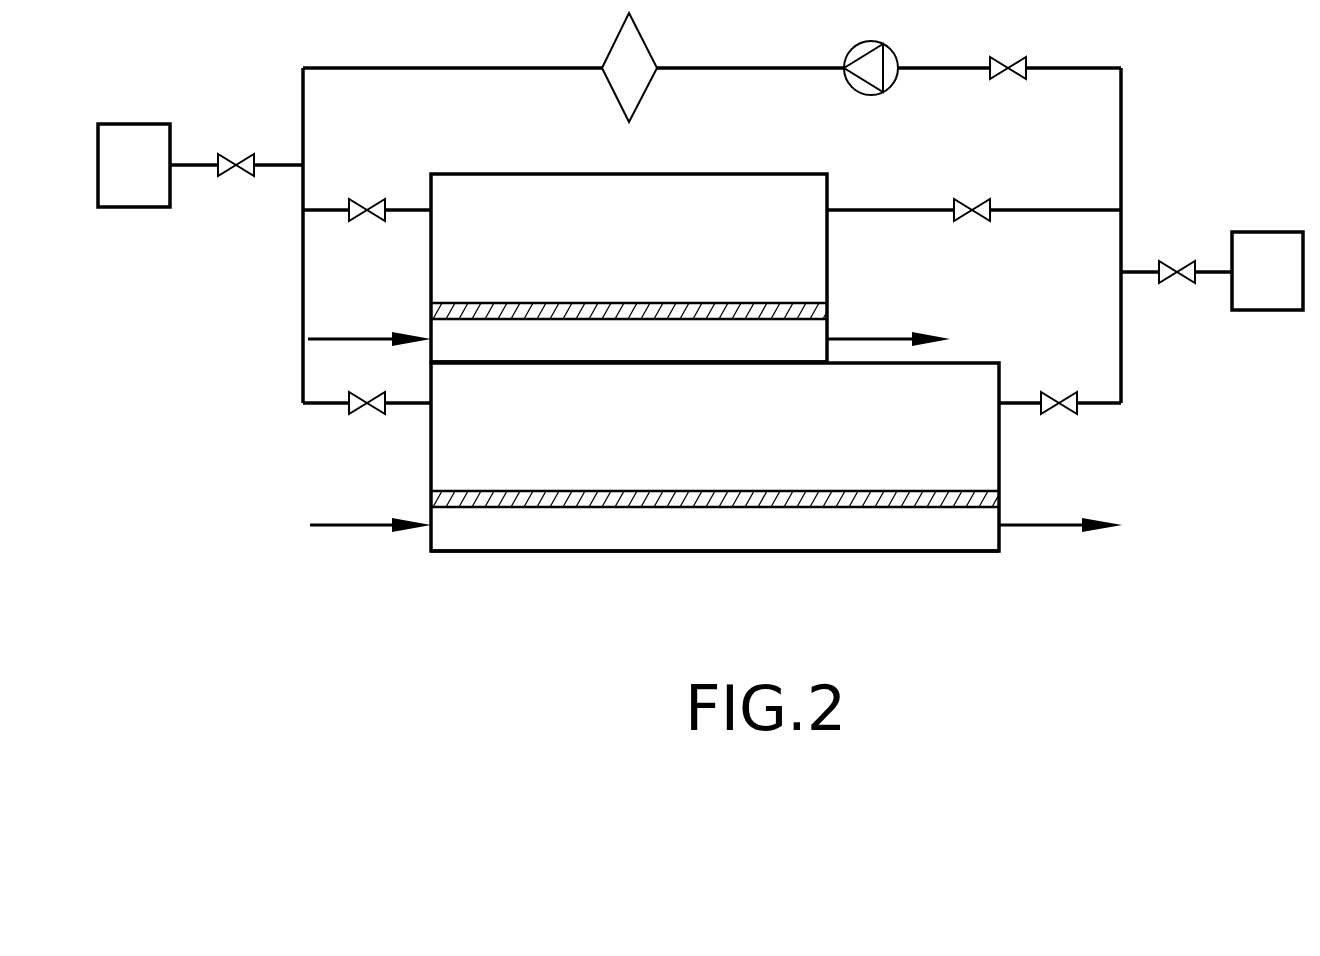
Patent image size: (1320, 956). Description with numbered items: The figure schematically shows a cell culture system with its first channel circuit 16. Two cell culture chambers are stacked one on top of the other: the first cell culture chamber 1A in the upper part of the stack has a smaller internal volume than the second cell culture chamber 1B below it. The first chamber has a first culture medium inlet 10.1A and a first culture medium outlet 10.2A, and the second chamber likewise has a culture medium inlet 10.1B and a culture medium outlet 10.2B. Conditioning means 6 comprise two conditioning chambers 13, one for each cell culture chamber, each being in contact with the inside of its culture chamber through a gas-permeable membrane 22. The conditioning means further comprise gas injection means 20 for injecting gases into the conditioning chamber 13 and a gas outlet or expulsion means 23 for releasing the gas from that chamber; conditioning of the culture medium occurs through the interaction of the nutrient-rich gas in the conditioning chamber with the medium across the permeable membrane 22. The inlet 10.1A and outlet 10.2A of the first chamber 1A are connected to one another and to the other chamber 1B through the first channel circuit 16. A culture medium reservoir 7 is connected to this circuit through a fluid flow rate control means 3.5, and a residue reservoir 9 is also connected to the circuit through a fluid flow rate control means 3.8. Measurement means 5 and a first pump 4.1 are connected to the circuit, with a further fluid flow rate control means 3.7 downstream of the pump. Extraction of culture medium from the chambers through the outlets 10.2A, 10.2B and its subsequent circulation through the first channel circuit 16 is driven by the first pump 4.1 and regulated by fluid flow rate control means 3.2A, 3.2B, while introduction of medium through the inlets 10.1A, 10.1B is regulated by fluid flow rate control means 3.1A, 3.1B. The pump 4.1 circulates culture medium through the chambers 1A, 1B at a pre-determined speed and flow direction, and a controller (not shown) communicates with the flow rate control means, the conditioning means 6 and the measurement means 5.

The first cell culture chamber 1A is at (764, 165).
The second cell culture chamber 1B is at (986, 354).
The fluid flow rate control means 3.1A is at (350, 213).
The fluid flow rate control means 3.1B is at (352, 408).
The fluid flow rate control means 3.2A is at (960, 200).
The fluid flow rate control means 3.2B is at (1080, 412).
The fluid flow rate control means 3.5 is at (252, 157).
The fluid flow rate control means 3.7 is at (1025, 60).
The fluid flow rate control means 3.8 is at (1160, 282).
The first pump 4.1 is at (862, 42).
The measurement means 5 is at (629, 67).
The conditioning means 6 is at (555, 376).
The culture medium reservoir 7 is at (134, 165).
The residue reservoir 9 is at (1267, 271).
The first culture medium inlet 10.1A is at (431, 210).
The first culture medium outlet 10.2A is at (827, 210).
The culture medium inlet 10.1B is at (431, 403).
The culture medium outlet 10.2B is at (999, 403).
The conditioning chamber 13 is at (715, 436).
The first channel circuit 16 is at (1122, 112).
The gas injection means 20 is at (315, 342).
The gas-permeable membrane 22 is at (612, 305).
The gas outlet or expulsion means 23 is at (855, 339).